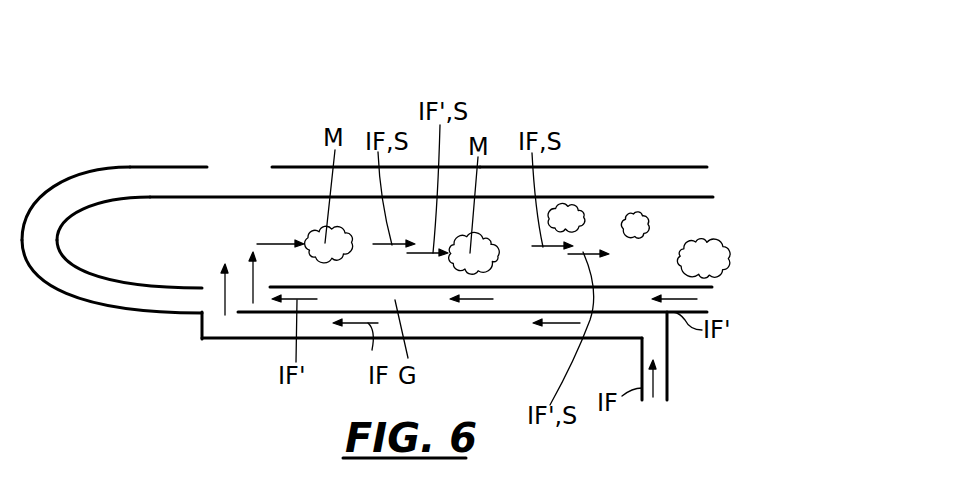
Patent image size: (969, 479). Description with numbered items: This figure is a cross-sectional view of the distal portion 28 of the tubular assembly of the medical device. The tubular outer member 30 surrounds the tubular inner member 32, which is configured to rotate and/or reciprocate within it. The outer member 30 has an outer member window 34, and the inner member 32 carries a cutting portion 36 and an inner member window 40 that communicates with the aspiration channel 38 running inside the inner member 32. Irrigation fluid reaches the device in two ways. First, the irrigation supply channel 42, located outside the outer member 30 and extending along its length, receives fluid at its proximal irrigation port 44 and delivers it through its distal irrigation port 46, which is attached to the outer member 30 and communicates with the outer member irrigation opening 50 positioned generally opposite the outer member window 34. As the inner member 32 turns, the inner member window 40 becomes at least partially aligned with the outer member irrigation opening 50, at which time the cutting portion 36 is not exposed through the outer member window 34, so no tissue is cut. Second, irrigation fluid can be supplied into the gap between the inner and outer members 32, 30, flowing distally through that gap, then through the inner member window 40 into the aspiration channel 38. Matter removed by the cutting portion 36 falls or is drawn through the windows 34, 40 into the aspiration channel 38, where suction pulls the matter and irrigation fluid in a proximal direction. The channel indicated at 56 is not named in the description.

The distal portion 28 is at (76, 118).
The tubular outer member 30 is at (667, 164).
The tubular inner member 32 is at (177, 194).
The outer member window 34 is at (254, 174).
The cutting portion 36 is at (89, 272).
The inner member window 40 is at (215, 290).
The aspiration channel 38 is at (612, 213).
The irrigation supply channel 42 is at (503, 327).
The proximal irrigation port 44 is at (670, 391).
The distal irrigation port 46 is at (227, 328).
The outer member irrigation opening 50 is at (213, 312).
The suction channel 56 is at (433, 300).